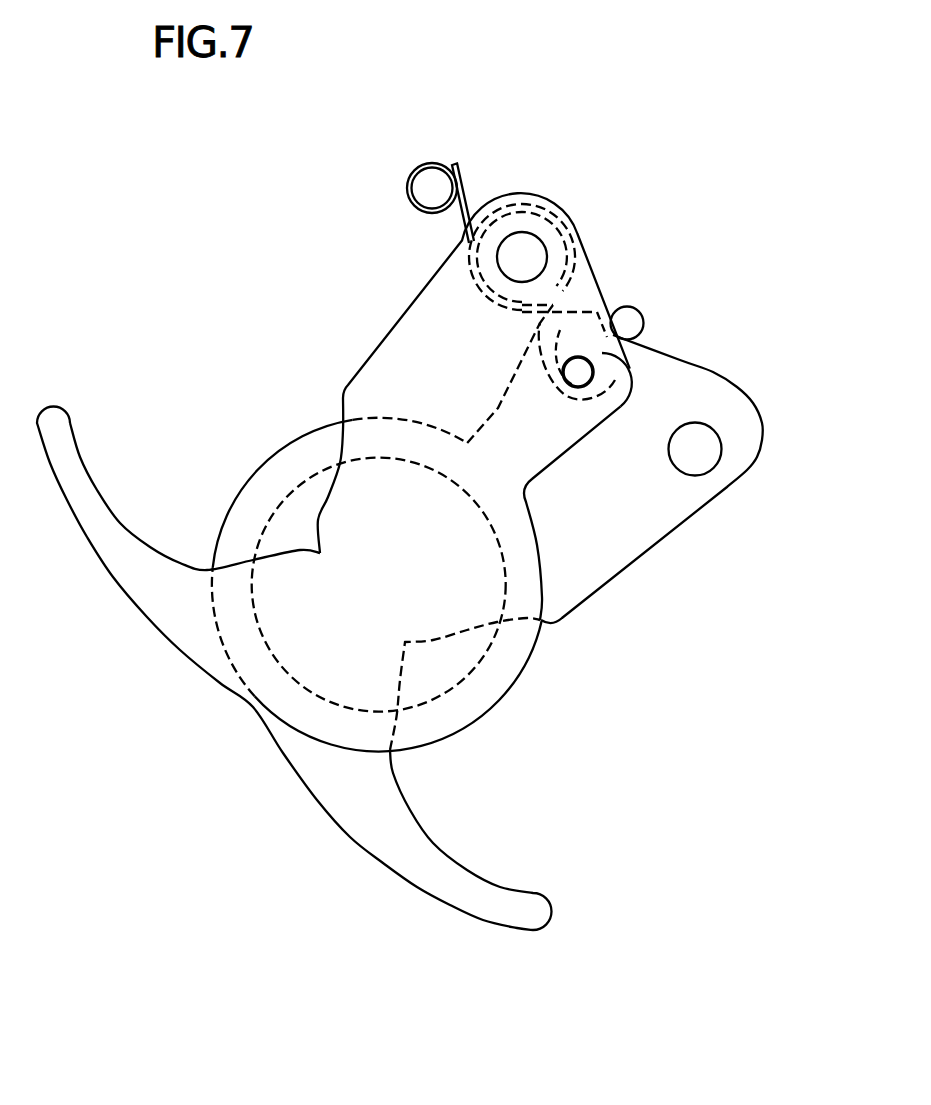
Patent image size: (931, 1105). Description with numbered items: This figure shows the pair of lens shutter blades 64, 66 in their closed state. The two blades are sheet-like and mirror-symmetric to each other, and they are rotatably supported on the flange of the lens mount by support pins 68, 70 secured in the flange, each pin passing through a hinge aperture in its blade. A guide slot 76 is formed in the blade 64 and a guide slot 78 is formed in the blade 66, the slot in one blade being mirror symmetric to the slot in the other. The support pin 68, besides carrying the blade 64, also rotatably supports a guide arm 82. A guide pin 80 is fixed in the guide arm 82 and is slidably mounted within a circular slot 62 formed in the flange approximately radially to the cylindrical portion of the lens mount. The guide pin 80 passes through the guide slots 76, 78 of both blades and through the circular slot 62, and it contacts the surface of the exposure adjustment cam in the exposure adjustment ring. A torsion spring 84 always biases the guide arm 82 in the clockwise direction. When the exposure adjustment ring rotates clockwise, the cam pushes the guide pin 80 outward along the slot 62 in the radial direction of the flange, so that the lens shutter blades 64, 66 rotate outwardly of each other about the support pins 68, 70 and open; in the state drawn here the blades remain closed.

The circular slot 62 is at (633, 317).
The lens shutter blade 64 is at (408, 332).
The lens shutter blade 66 is at (615, 558).
The support pin 68 is at (523, 243).
The support pin 70 is at (705, 463).
The guide slot 76 is at (637, 385).
The guide slot 78 is at (617, 297).
The guide pin 80 is at (612, 352).
The guide arm 82 is at (572, 293).
The torsion spring 84 is at (523, 202).